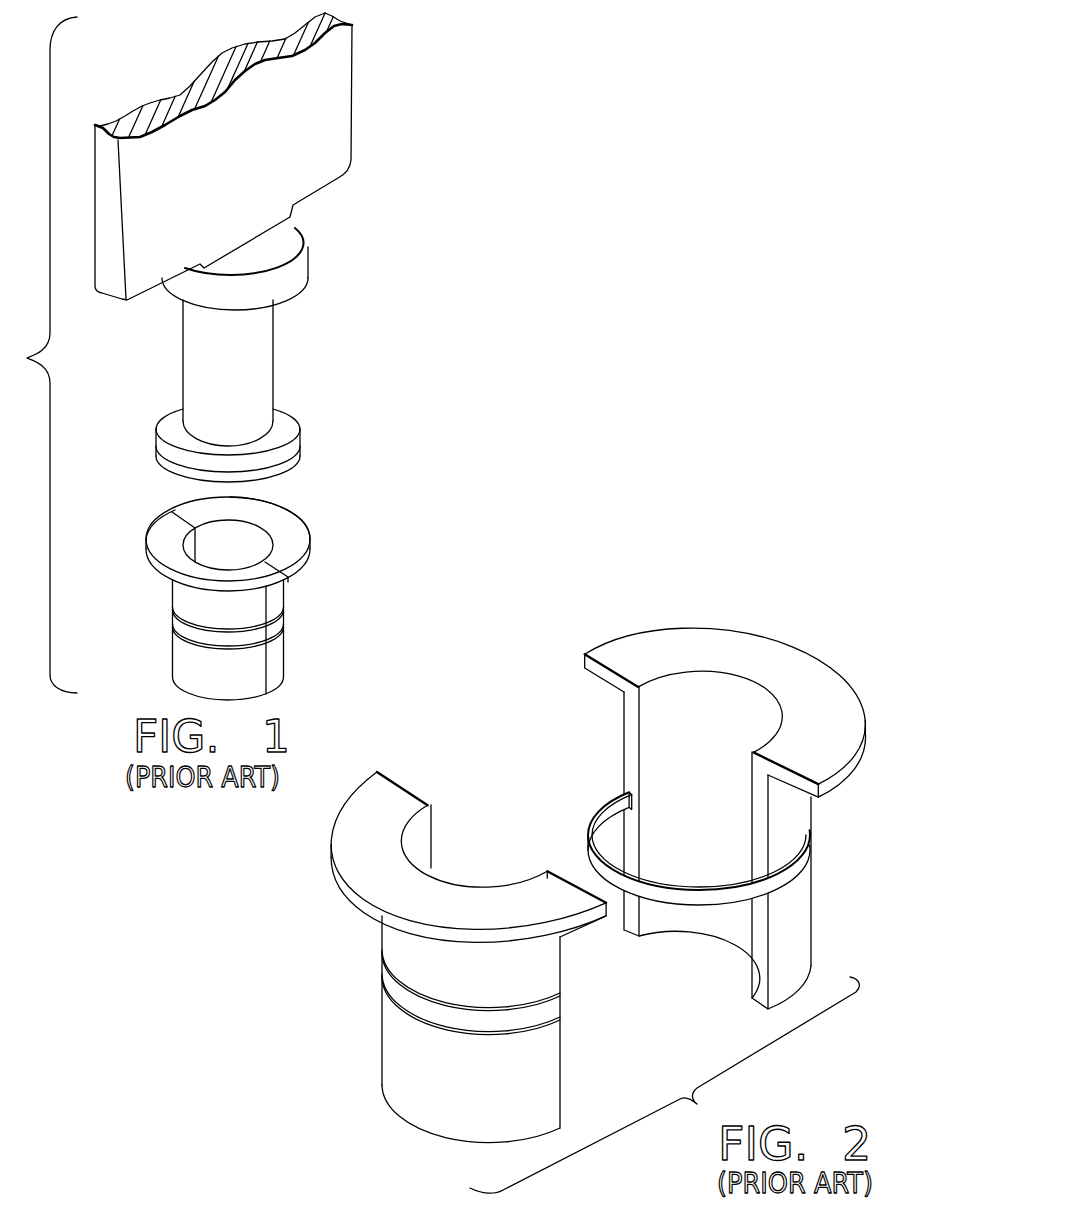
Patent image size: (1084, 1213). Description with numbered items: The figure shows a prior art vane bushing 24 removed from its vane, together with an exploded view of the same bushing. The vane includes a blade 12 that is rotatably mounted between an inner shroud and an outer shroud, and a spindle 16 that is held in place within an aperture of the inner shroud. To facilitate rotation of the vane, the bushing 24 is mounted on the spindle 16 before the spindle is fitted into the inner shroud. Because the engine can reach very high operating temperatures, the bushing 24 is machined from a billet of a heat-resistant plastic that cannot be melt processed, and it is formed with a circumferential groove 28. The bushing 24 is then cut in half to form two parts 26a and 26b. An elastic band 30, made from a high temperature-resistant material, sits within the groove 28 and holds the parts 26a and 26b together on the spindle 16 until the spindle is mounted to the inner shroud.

In FIG. 1, the blade 12 is at (353, 102).
In FIG. 1, the spindle 16 is at (276, 353).
In FIG. 1, the bushing 24 is at (244, 589).
In FIG. 1, the part 26a is at (283, 507).
In FIG. 2, the part 26a is at (828, 658).
In FIG. 1, the part 26b is at (152, 576).
In FIG. 2, the part 26b is at (356, 893).
In FIG. 2, the circumferential groove 28 is at (614, 803).
In FIG. 1, the elastic band 30 is at (317, 597).
In FIG. 2, the elastic band 30 is at (702, 903).